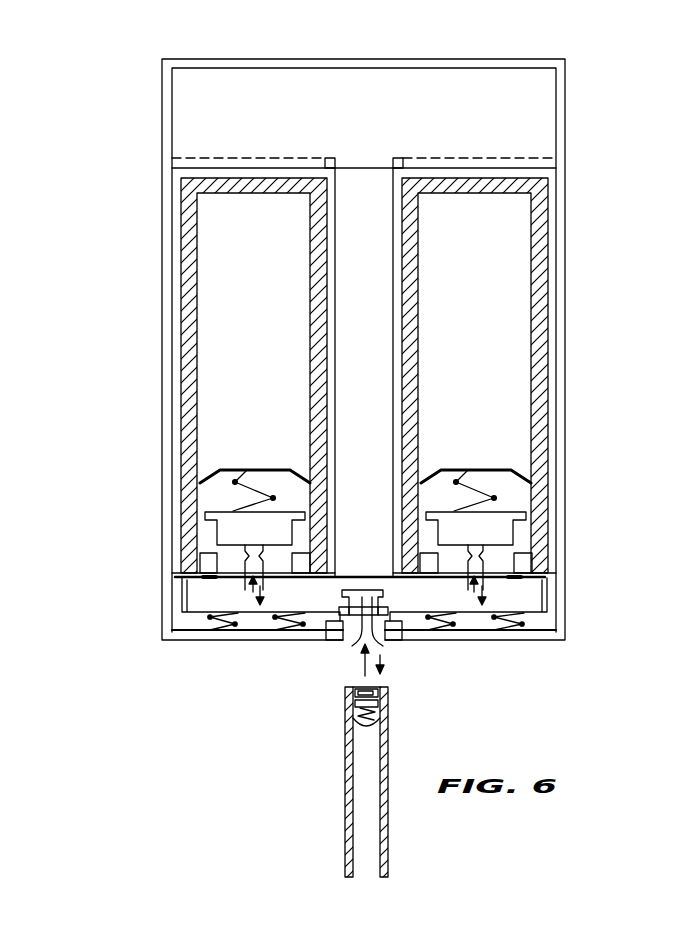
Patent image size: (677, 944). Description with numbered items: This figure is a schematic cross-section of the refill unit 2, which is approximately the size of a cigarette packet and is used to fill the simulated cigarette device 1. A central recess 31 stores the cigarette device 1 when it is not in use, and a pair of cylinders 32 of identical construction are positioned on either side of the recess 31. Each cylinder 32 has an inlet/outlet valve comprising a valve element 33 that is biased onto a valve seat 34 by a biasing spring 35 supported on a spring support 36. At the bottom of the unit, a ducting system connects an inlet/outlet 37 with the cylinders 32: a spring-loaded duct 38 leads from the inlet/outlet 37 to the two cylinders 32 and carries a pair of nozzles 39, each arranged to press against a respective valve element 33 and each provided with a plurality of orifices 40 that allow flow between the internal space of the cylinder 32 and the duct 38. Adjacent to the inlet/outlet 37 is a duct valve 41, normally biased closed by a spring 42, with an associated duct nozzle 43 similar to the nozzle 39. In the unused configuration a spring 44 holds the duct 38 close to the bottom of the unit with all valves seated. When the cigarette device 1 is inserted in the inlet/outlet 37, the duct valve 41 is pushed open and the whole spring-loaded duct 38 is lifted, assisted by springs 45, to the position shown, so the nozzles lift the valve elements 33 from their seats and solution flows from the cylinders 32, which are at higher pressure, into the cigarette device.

The simulated cigarette device 1 is at (332, 774).
The refill unit 2 is at (124, 136).
The recess 31 is at (378, 268).
The cylinder 32 is at (268, 268).
The valve element 33 is at (268, 538).
The valve seat 34 is at (205, 557).
The biasing spring 35 is at (246, 470).
The spring support 36 is at (262, 470).
The inlet/outlet 37 is at (353, 637).
The spring-loaded duct 38 is at (196, 603).
The nozzle 39 is at (482, 556).
The orifice 40 is at (265, 556).
The duct valve 41 is at (383, 592).
The spring 42 is at (345, 592).
The duct nozzle 43 is at (381, 636).
The spring 44 is at (210, 577).
The spring 45 is at (224, 626).